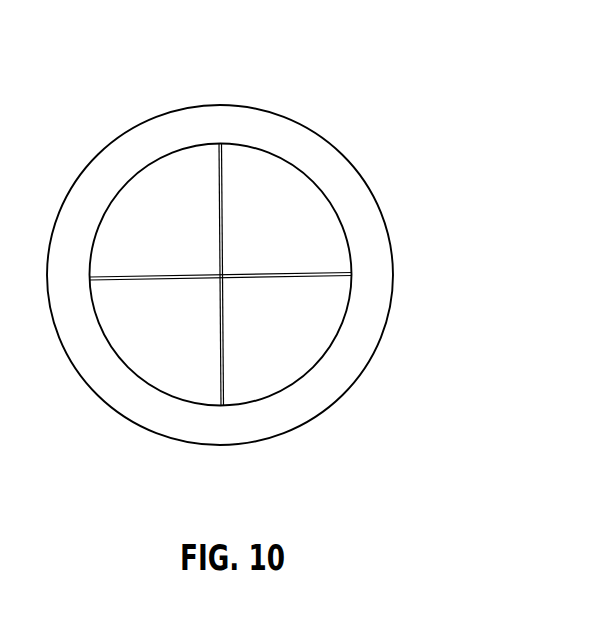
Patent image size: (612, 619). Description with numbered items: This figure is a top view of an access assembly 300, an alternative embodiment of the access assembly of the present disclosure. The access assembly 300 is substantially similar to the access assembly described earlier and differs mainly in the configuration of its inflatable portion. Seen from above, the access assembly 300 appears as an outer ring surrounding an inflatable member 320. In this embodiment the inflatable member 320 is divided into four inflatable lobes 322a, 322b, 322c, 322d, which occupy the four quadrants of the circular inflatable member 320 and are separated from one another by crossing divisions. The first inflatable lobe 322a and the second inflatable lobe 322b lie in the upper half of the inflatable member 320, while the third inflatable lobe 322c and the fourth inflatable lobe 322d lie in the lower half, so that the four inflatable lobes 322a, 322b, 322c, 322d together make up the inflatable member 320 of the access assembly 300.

The access assembly 300 is at (373, 93).
The inflatable member 320 is at (303, 203).
The inflatable lobe 322a is at (190, 242).
The inflatable lobe 322b is at (297, 240).
The inflatable lobe 322c is at (190, 342).
The inflatable lobe 322d is at (299, 340).